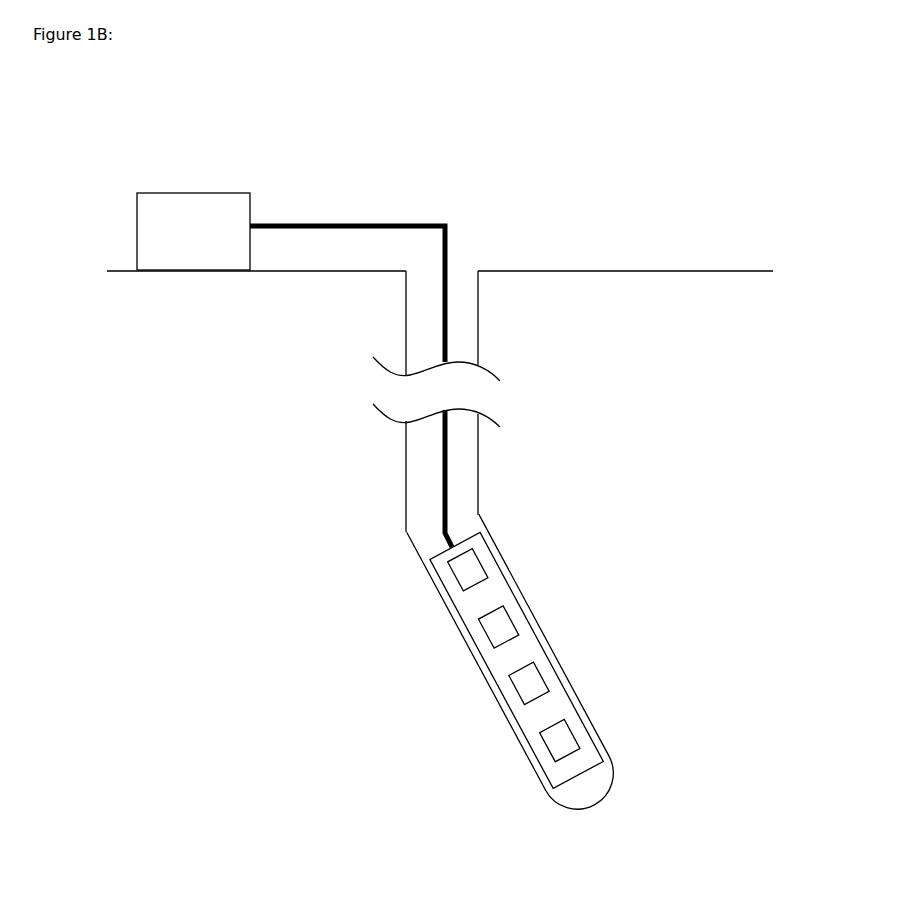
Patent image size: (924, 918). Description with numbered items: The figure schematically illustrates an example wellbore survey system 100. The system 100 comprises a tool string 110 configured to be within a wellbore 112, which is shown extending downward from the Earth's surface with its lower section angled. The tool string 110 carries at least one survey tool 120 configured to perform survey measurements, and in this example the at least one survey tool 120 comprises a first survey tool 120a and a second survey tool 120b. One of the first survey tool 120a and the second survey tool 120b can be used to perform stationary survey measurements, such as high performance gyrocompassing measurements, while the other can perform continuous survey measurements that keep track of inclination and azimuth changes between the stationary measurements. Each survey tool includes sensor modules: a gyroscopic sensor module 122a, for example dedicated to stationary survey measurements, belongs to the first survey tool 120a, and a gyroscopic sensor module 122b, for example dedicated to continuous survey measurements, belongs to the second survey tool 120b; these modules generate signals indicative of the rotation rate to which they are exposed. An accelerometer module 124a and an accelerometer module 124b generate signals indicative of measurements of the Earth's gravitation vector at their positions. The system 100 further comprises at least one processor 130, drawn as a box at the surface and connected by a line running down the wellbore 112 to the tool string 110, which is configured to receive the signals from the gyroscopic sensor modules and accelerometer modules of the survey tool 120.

The system 100 is at (732, 130).
The tool string 110 is at (569, 508).
The wellbore 112 is at (478, 323).
The survey tool 120 is at (738, 535).
The first survey tool 120a is at (569, 760).
The second survey tool 120b is at (509, 641).
The gyroscopic sensor module 122a is at (551, 746).
The gyroscopic sensor module 122b is at (480, 626).
The accelerometer module 124a is at (517, 693).
The accelerometer module 124b is at (450, 570).
The processor 130 is at (212, 193).